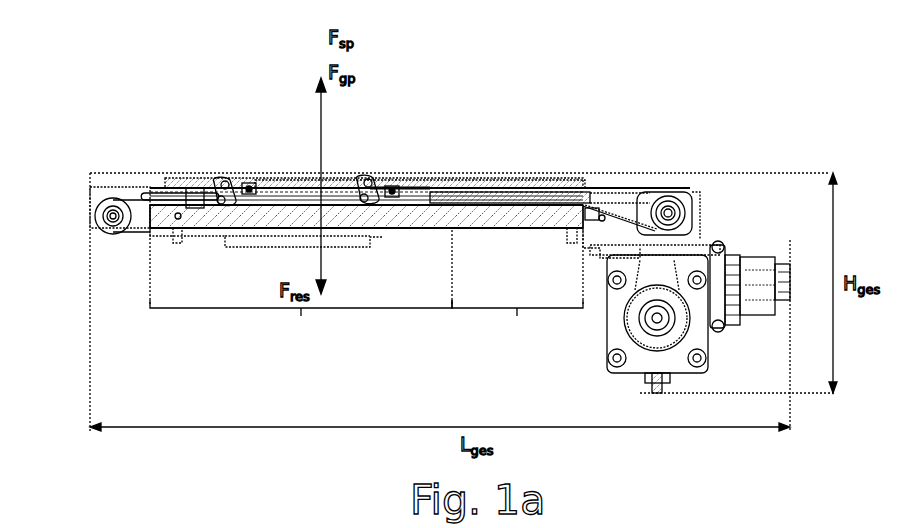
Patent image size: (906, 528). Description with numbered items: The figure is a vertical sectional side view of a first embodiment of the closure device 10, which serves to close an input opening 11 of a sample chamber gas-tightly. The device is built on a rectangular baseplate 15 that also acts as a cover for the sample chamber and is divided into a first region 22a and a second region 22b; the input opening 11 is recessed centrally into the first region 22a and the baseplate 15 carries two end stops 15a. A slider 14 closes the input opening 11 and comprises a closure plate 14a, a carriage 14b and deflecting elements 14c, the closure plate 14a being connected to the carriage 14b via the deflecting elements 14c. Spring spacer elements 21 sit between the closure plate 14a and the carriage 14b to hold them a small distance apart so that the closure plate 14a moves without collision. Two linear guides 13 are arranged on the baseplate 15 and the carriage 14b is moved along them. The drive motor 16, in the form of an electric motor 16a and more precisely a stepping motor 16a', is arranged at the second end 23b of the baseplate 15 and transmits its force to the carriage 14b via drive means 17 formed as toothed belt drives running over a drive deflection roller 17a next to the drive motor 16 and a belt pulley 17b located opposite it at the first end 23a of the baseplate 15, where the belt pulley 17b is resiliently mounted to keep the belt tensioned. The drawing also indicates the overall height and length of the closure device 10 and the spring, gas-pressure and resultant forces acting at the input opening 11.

The closure device 10 is at (168, 70).
The input opening 11 is at (337, 240).
The linear guides 13 is at (562, 190).
The slider 14 is at (393, 142).
The closure plate 14a is at (305, 184).
The carriage 14b is at (302, 203).
The deflecting elements 14c is at (216, 185).
The baseplate 15 is at (473, 228).
The end stops 15a is at (200, 197).
The drive motor 16 is at (748, 400).
The electric motor 16a is at (725, 286).
The stepping motor 16a' is at (765, 286).
The drive means 17 is at (588, 170).
The drive deflection roller 17a is at (668, 210).
The belt pulley 17b is at (112, 230).
The spring spacer elements 21 is at (258, 185).
The first region 22a is at (301, 330).
The second region 22b is at (517, 330).
The first end 23a is at (80, 208).
The second end 23b is at (710, 205).